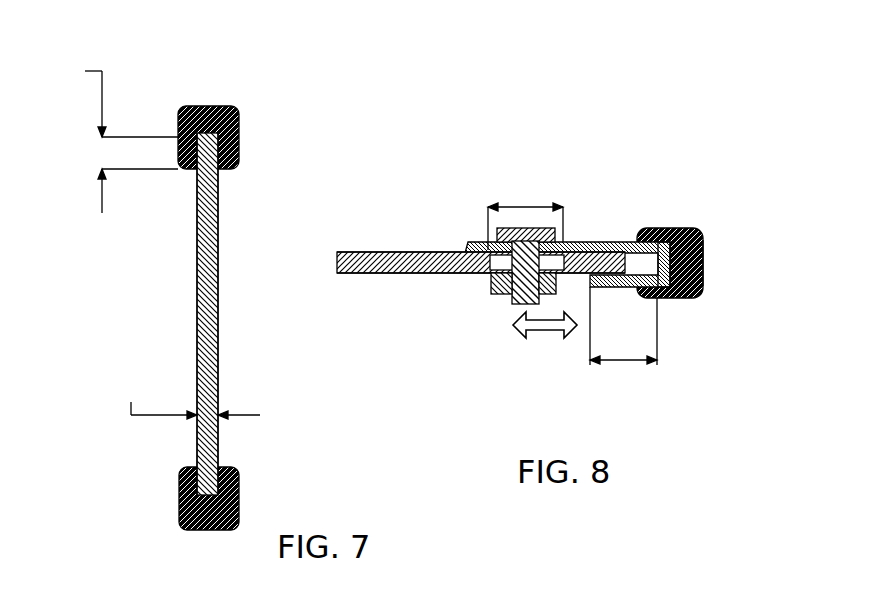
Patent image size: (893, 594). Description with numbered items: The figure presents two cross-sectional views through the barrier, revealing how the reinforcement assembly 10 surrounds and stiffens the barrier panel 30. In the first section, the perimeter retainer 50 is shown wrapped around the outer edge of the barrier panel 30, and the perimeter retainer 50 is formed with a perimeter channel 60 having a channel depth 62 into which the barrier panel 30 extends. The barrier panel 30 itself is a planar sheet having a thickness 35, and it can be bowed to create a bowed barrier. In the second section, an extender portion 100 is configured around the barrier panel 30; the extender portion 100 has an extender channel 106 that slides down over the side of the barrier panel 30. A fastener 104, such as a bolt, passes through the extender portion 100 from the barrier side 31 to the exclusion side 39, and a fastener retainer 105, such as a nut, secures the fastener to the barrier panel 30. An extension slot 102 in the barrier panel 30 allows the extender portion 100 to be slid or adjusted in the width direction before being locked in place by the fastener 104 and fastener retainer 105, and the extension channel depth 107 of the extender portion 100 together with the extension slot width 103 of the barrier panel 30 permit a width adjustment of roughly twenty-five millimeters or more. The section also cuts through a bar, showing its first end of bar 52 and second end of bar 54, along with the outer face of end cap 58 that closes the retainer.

In FIG. 8, the reinforcement assembly 10 is at (537, 246).
In FIG. 7, the barrier panel 30 is at (219, 343).
In FIG. 8, the barrier panel 30 is at (407, 251).
In FIG. 7, the barrier side 31 is at (190, 283).
In FIG. 8, the barrier side 31 is at (409, 282).
In FIG. 7, the thickness 35 is at (188, 397).
In FIG. 7, the exclusion side 39 is at (226, 236).
In FIG. 8, the exclusion side 39 is at (441, 242).
In FIG. 7, the perimeter retainer 50 is at (253, 96).
In FIG. 8, the perimeter retainer 50 is at (690, 232).
In FIG. 7, the first end of bar 52 is at (211, 106).
In FIG. 7, the second end of bar 54 is at (198, 533).
In FIG. 8, the outer face of end cap 58 is at (704, 252).
In FIG. 7, the perimeter channel 60 is at (184, 170).
In FIG. 7, the channel depth 62 is at (116, 98).
In FIG. 8, the extender portion 100 is at (613, 242).
In FIG. 8, the extension slot 102 is at (468, 274).
In FIG. 8, the extension slot width 103 is at (525, 218).
In FIG. 8, the fastener 104 is at (515, 306).
In FIG. 8, the fastener retainer 105 is at (502, 296).
In FIG. 8, the extender channel 106 is at (650, 228).
In FIG. 8, the extension channel depth 107 is at (623, 336).